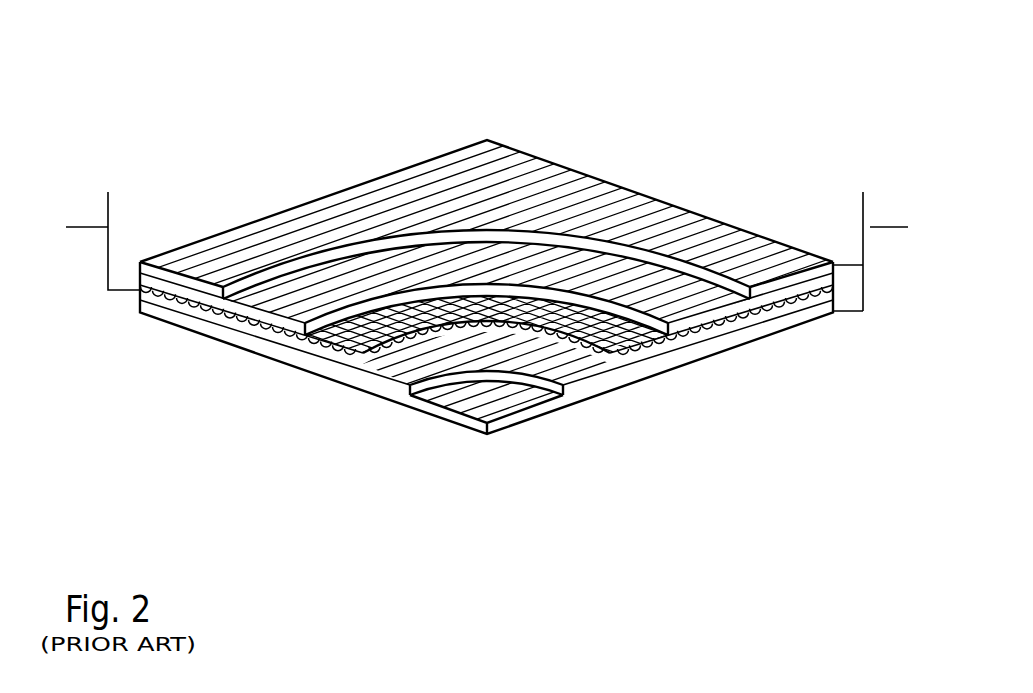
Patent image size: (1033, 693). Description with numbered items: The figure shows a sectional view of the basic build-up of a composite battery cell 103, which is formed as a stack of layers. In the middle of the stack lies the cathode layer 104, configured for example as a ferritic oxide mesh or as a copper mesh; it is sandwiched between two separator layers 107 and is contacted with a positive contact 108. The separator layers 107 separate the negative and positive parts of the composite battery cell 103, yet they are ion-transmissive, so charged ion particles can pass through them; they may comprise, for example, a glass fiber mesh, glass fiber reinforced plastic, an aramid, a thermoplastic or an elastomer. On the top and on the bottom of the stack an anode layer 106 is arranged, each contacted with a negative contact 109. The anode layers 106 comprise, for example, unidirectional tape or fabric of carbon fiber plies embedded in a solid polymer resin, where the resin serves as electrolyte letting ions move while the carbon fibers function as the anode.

The composite battery cell 103 is at (490, 282).
The cathode layer 104 is at (646, 355).
The anode layer 106 is at (641, 209).
The separator layer 107 is at (668, 296).
The positive contact 108 is at (84, 241).
The negative contact 109 is at (889, 251).